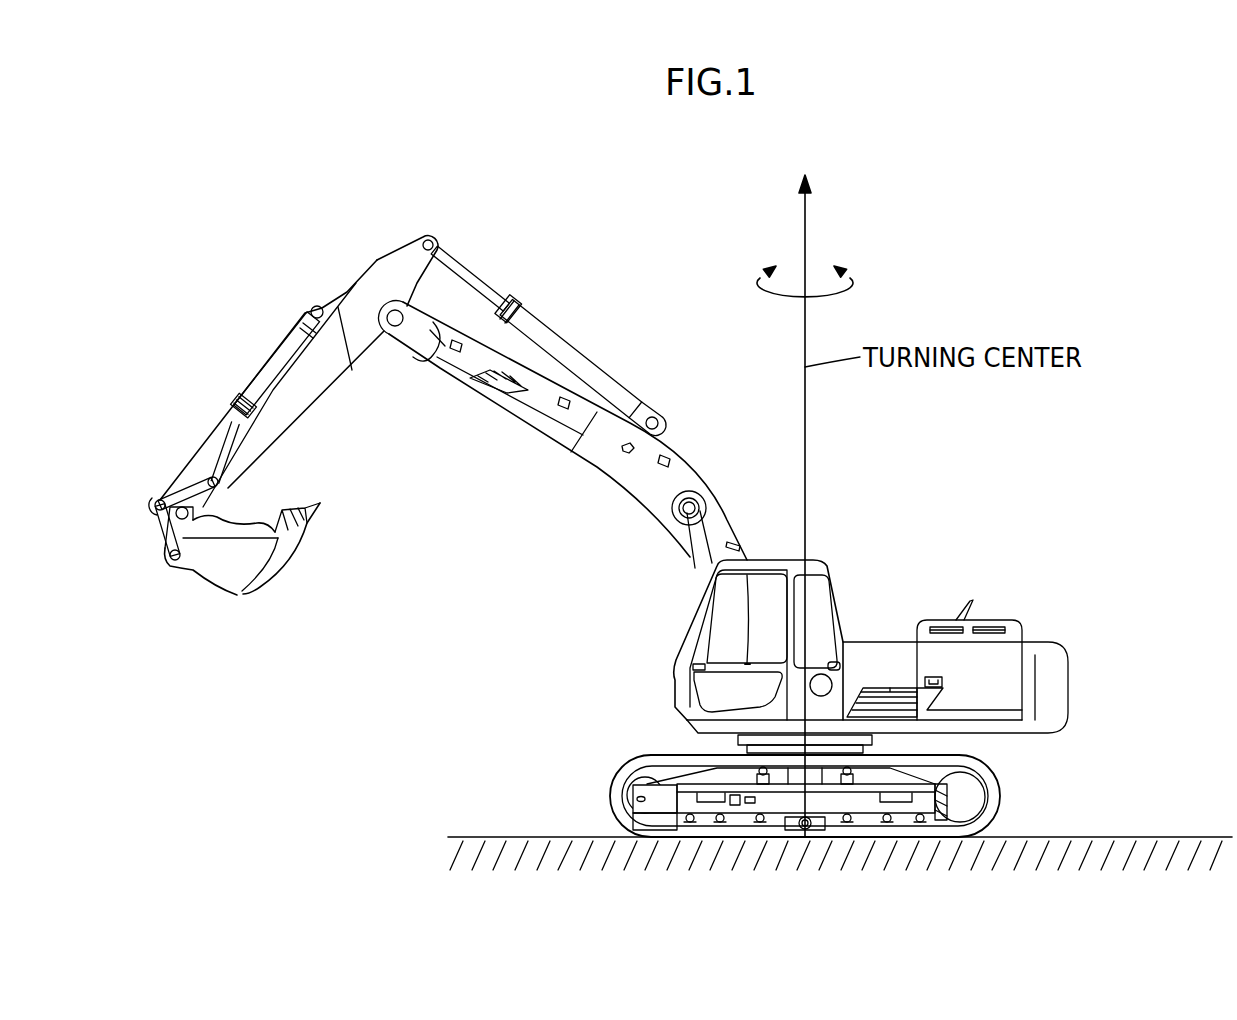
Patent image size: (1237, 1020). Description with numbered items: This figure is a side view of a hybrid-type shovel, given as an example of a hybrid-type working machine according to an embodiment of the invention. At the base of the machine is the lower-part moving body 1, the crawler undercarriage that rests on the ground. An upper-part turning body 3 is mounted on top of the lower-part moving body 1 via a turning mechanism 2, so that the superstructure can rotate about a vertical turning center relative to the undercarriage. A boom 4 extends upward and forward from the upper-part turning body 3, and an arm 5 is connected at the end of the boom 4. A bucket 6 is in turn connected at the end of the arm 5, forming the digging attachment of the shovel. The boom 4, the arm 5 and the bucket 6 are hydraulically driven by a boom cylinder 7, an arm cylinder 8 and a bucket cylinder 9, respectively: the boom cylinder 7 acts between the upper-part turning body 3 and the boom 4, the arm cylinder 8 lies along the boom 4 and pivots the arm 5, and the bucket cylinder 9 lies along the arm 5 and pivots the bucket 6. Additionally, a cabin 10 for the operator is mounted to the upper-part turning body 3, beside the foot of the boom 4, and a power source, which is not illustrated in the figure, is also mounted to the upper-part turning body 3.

The lower-part moving body 1 is at (613, 798).
The turning mechanism 2 is at (870, 741).
The upper-part turning body 3 is at (882, 642).
The boom 4 is at (605, 467).
The arm 5 is at (322, 387).
The bucket 6 is at (232, 588).
The boom cylinder 7 is at (698, 542).
The arm cylinder 8 is at (593, 373).
The bucket cylinder 9 is at (267, 372).
The cabin 10 is at (823, 560).